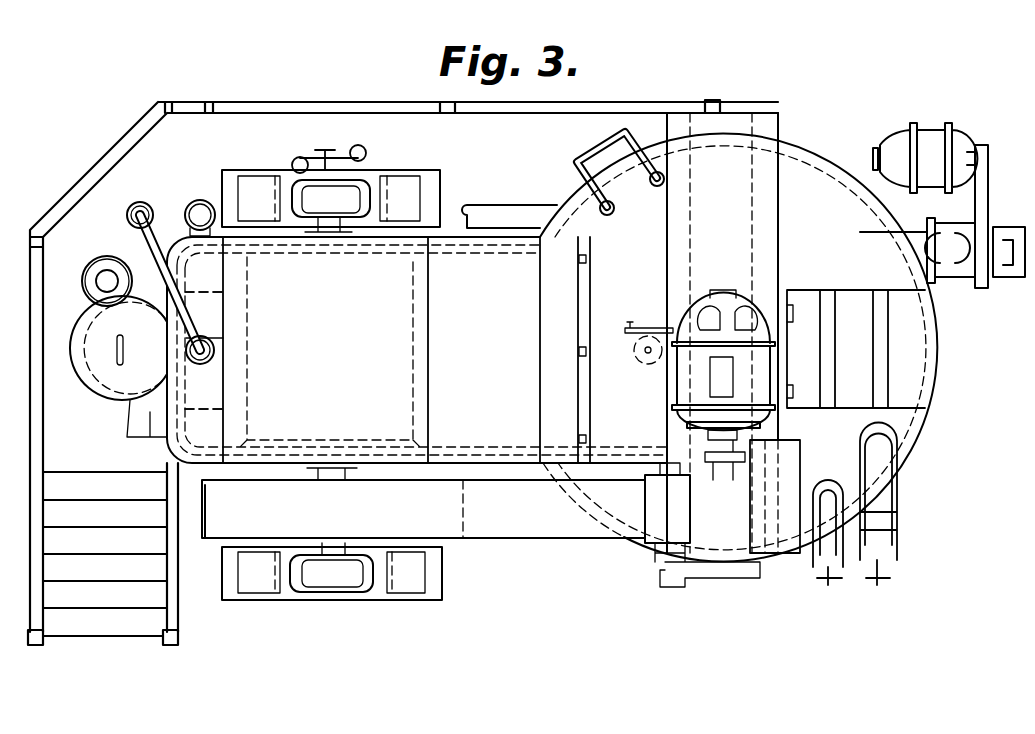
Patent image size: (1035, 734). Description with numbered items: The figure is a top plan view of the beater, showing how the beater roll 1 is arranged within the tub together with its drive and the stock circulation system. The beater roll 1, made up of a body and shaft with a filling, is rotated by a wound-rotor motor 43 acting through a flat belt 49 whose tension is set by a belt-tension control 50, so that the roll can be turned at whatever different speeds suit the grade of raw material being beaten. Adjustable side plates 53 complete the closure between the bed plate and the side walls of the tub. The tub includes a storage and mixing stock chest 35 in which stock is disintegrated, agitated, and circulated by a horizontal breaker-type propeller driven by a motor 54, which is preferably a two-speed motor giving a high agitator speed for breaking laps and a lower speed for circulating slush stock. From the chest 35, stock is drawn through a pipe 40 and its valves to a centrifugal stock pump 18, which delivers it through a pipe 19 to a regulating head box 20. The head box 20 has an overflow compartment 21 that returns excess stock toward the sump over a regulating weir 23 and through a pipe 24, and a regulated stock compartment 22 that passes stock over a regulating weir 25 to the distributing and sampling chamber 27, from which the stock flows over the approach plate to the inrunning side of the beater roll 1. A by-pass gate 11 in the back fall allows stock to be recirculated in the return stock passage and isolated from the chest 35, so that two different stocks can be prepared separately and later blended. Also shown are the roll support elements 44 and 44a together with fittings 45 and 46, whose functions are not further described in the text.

The beater roll body and shaft 1 is at (249, 351).
The by-pass gate 11 is at (565, 350).
The centrifugal stock pump 18 is at (94, 268).
The pipe 19 is at (143, 241).
The regulating head box 20 is at (204, 362).
The overflow compartment 21 is at (204, 272).
The regulated stock compartment 22 is at (204, 425).
The regulating weir 23 is at (204, 304).
The pipe 24 is at (198, 212).
The regulating weir 25 is at (200, 412).
The distributing and sampling chamber 27 is at (118, 366).
The storage and mixing stock chest 35 is at (847, 193).
The pipe 40 is at (502, 207).
The wound-rotor motor 43 is at (680, 387).
The roller unit 44 is at (331, 201).
The lower roller unit 44a is at (453, 578).
The valve 45 is at (322, 152).
The handwheel 46 is at (293, 162).
The flat belt 49 is at (525, 523).
The belt-tension control 50 is at (722, 513).
The adjustable side plates 53 is at (284, 444).
The motor 54 is at (893, 138).